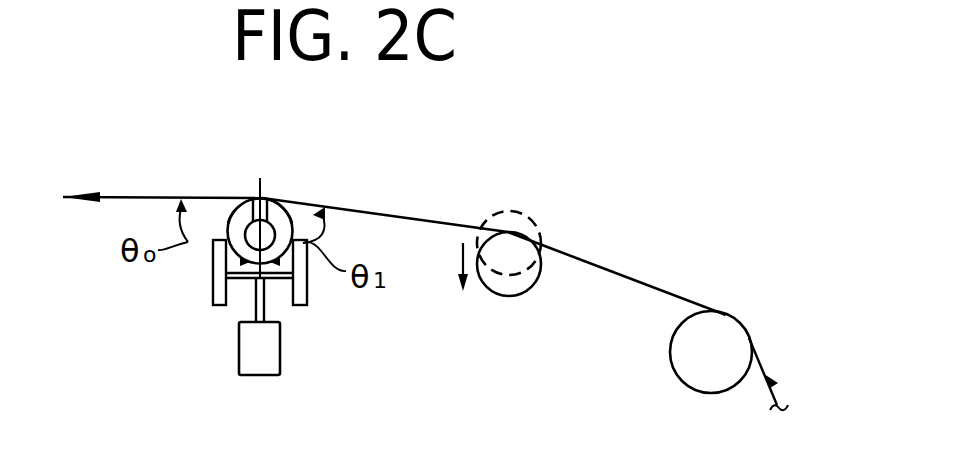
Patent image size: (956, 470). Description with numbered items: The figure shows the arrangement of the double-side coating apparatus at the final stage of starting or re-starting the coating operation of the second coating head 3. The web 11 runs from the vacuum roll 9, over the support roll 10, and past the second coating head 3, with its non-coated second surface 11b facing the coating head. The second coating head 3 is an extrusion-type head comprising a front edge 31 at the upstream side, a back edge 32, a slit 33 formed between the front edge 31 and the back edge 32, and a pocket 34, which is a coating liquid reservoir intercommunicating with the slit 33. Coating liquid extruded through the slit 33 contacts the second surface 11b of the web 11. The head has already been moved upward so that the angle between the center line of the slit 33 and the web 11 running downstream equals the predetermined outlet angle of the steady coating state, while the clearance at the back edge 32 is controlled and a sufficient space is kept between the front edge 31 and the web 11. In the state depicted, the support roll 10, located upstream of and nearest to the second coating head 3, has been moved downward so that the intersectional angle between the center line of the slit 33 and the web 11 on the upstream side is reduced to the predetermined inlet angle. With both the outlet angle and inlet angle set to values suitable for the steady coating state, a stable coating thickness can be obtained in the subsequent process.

The second coating head 3 is at (193, 278).
The vacuum roll 9 is at (687, 363).
The support roll 10 is at (513, 284).
The web 11 is at (621, 262).
The second surface 11b is at (423, 223).
The front edge 31 is at (288, 215).
The back edge 32 is at (245, 218).
The slit 33 is at (280, 222).
The pocket 34 is at (230, 223).